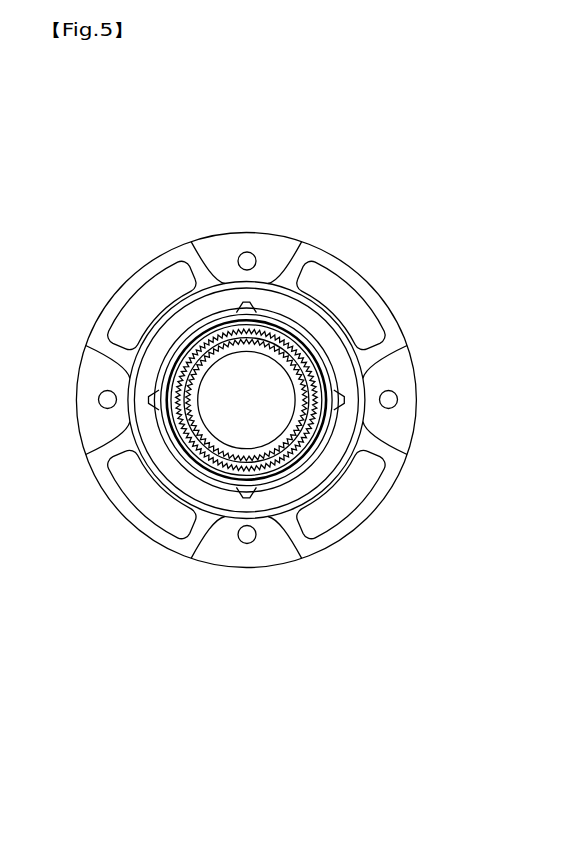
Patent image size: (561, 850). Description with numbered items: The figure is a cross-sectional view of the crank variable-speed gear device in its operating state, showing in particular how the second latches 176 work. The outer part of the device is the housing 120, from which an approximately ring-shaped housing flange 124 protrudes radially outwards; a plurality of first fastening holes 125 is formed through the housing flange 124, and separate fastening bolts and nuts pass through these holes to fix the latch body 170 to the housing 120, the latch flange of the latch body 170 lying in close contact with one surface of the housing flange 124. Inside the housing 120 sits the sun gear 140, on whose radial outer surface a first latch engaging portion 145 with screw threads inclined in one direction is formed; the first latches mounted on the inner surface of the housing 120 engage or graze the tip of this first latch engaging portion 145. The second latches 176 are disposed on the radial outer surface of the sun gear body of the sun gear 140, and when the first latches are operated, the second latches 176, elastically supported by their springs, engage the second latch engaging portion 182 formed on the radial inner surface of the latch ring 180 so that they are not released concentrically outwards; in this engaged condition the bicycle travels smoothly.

The housing 120 is at (197, 236).
The housing flange 124 is at (243, 564).
The first fastening holes 125 is at (251, 253).
The sun gear 140 is at (272, 460).
The first latch engaging portion 145 is at (215, 448).
The latch body 170 is at (178, 440).
The second latches 176 is at (303, 427).
The latch ring 180 is at (297, 338).
The second latch engaging portion 182 is at (340, 388).